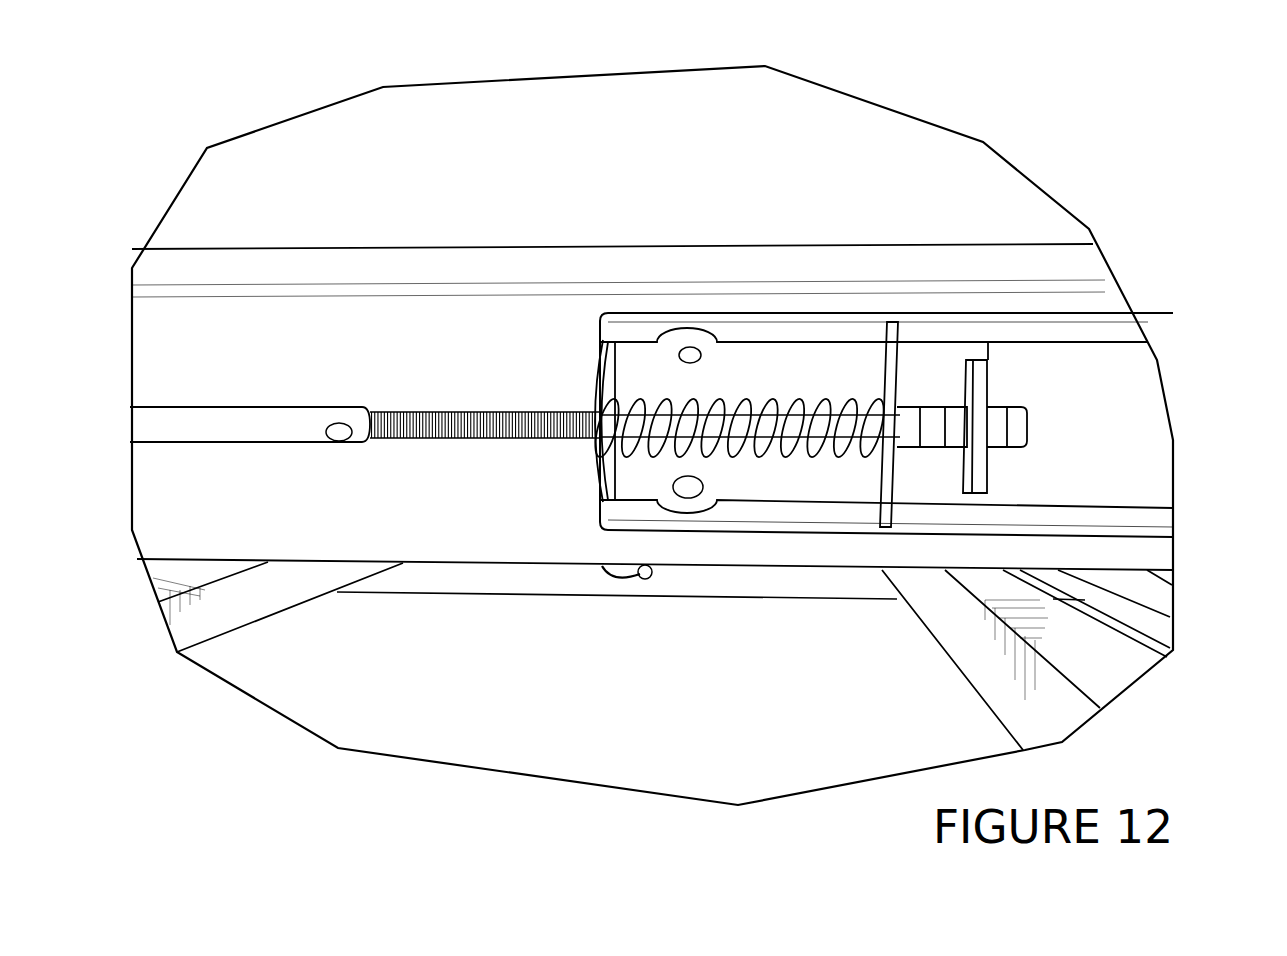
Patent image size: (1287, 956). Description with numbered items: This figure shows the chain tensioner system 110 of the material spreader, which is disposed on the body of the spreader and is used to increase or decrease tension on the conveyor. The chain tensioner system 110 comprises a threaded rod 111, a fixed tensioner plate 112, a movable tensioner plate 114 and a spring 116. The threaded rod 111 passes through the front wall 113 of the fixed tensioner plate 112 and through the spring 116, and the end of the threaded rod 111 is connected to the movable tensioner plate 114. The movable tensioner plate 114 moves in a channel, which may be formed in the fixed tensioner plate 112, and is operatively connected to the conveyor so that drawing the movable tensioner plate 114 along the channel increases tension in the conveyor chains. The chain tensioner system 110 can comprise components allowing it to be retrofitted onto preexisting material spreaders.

The chain tensioner system 110 is at (527, 328).
The threaded rod 111 is at (408, 407).
The fixed tensioner plate 112 is at (623, 483).
The front wall 113 is at (612, 363).
The movable tensioner plate 114 is at (1113, 380).
The spring 116 is at (797, 395).